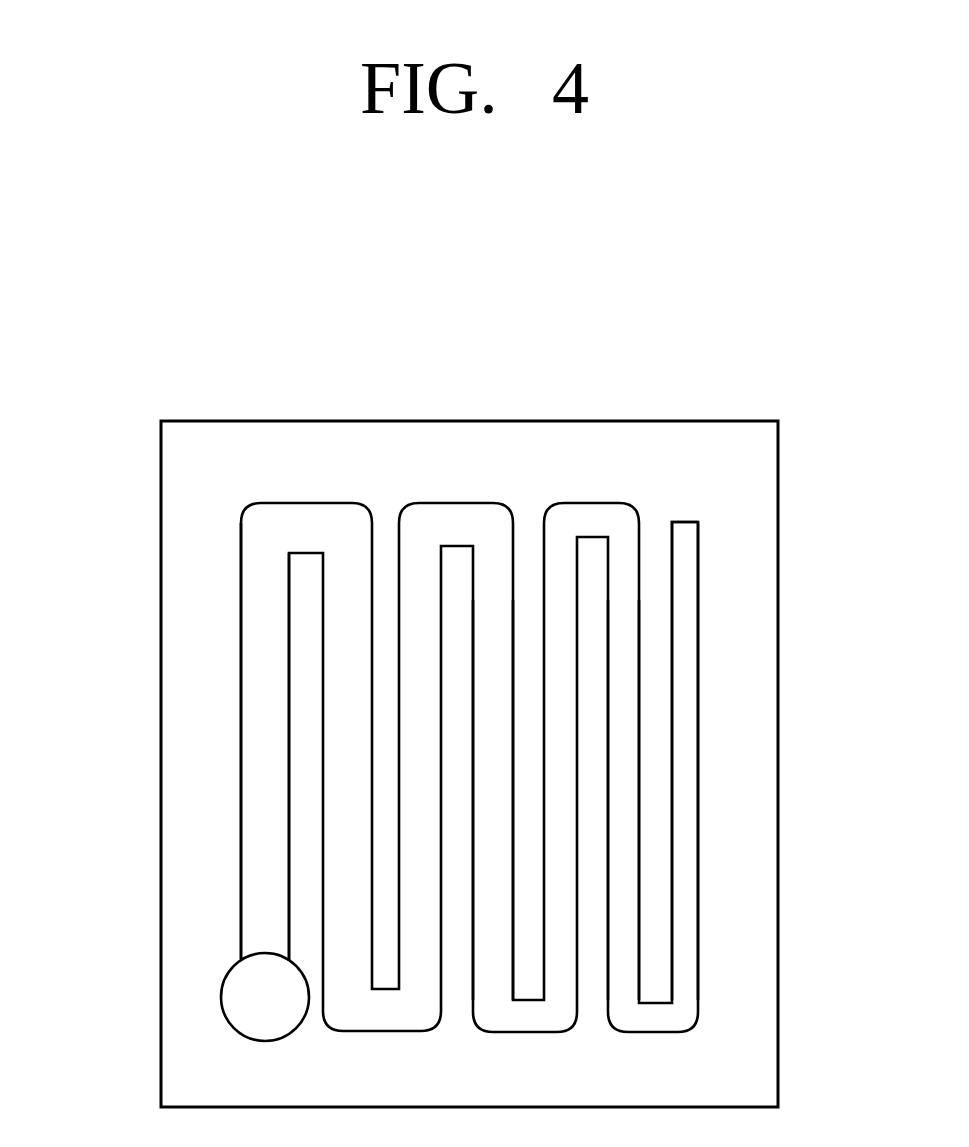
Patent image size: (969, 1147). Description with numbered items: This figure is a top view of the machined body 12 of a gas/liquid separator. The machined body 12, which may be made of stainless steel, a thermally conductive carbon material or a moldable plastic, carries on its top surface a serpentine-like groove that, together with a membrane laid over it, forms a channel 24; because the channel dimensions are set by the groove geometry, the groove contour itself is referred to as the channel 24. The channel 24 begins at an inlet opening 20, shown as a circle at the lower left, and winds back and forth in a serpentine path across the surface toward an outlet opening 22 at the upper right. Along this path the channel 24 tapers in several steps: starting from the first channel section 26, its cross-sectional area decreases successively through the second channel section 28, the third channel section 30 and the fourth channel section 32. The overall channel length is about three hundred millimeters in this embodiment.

The machined body 12 is at (598, 468).
The inlet opening 20 is at (264, 996).
The outlet opening 22 is at (684, 539).
The channel 24 is at (241, 606).
The first channel section 26 is at (263, 862).
The second channel section 28 is at (492, 798).
The third channel section 30 is at (628, 893).
The fourth channel section 32 is at (682, 786).